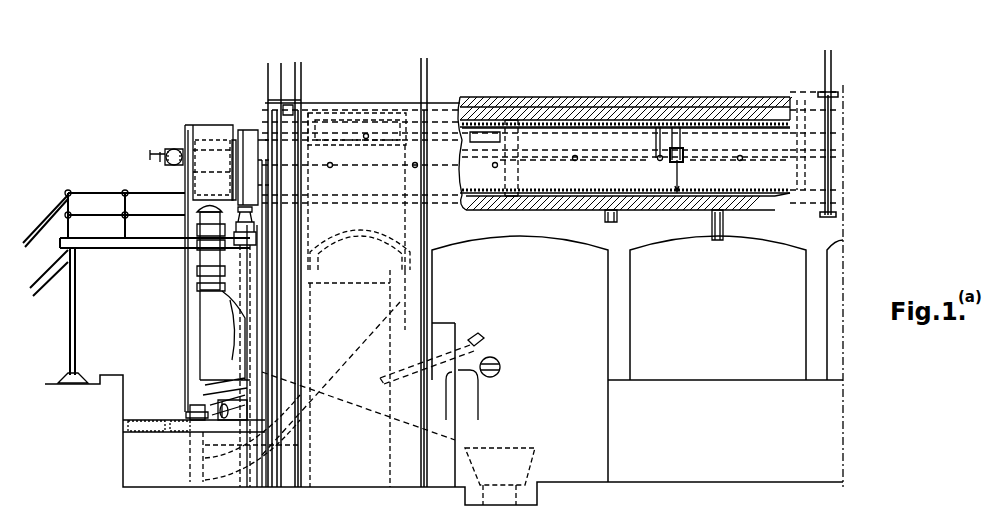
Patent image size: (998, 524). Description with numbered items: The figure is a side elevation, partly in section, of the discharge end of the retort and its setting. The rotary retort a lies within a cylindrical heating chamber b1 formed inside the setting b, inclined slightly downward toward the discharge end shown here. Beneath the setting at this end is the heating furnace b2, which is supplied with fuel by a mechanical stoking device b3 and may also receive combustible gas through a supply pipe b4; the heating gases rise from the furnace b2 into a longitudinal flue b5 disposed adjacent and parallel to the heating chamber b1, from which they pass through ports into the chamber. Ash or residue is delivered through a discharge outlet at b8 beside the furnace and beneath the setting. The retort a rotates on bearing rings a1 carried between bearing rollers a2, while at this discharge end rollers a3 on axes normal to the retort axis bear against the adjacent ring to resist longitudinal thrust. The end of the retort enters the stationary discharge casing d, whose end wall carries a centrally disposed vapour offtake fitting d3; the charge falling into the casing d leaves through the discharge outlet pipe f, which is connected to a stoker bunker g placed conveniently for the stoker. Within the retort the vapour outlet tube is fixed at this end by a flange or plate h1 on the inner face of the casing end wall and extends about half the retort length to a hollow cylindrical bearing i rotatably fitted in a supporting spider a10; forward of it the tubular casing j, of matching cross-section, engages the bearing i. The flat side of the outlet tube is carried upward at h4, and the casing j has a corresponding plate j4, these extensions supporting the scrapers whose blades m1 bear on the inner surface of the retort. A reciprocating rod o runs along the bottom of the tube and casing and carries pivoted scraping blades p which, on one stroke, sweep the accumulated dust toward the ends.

The rotary retort a is at (740, 118).
The bearing rings a1 is at (258, 126).
The bearing rollers a2 is at (252, 210).
The thrust rollers a3 is at (245, 213).
The supporting spider a10 is at (680, 175).
The setting b is at (655, 220).
The heating chamber b1 is at (760, 103).
The heating furnace b2 is at (358, 378).
The mechanical stoking device b3 is at (265, 418).
The supply pipe b4 is at (478, 335).
The longitudinal flue b5 is at (352, 124).
The discharge outlet b8 is at (458, 442).
The stationary discharge casing d is at (222, 158).
The vapour offtake fitting d3 is at (170, 156).
The discharge outlet pipe f is at (205, 258).
The stoker bunker g is at (228, 347).
The flange or plate h1 is at (212, 167).
The upward extension of vapour outlet tube h4 is at (665, 130).
The hollow cylindrical bearing i is at (672, 160).
The tubular casing j is at (755, 160).
The upward extension of tubular casing j4 is at (690, 133).
The scraper blade m1 is at (598, 120).
The reciprocating rod o is at (612, 160).
The scraping blade p is at (570, 165).